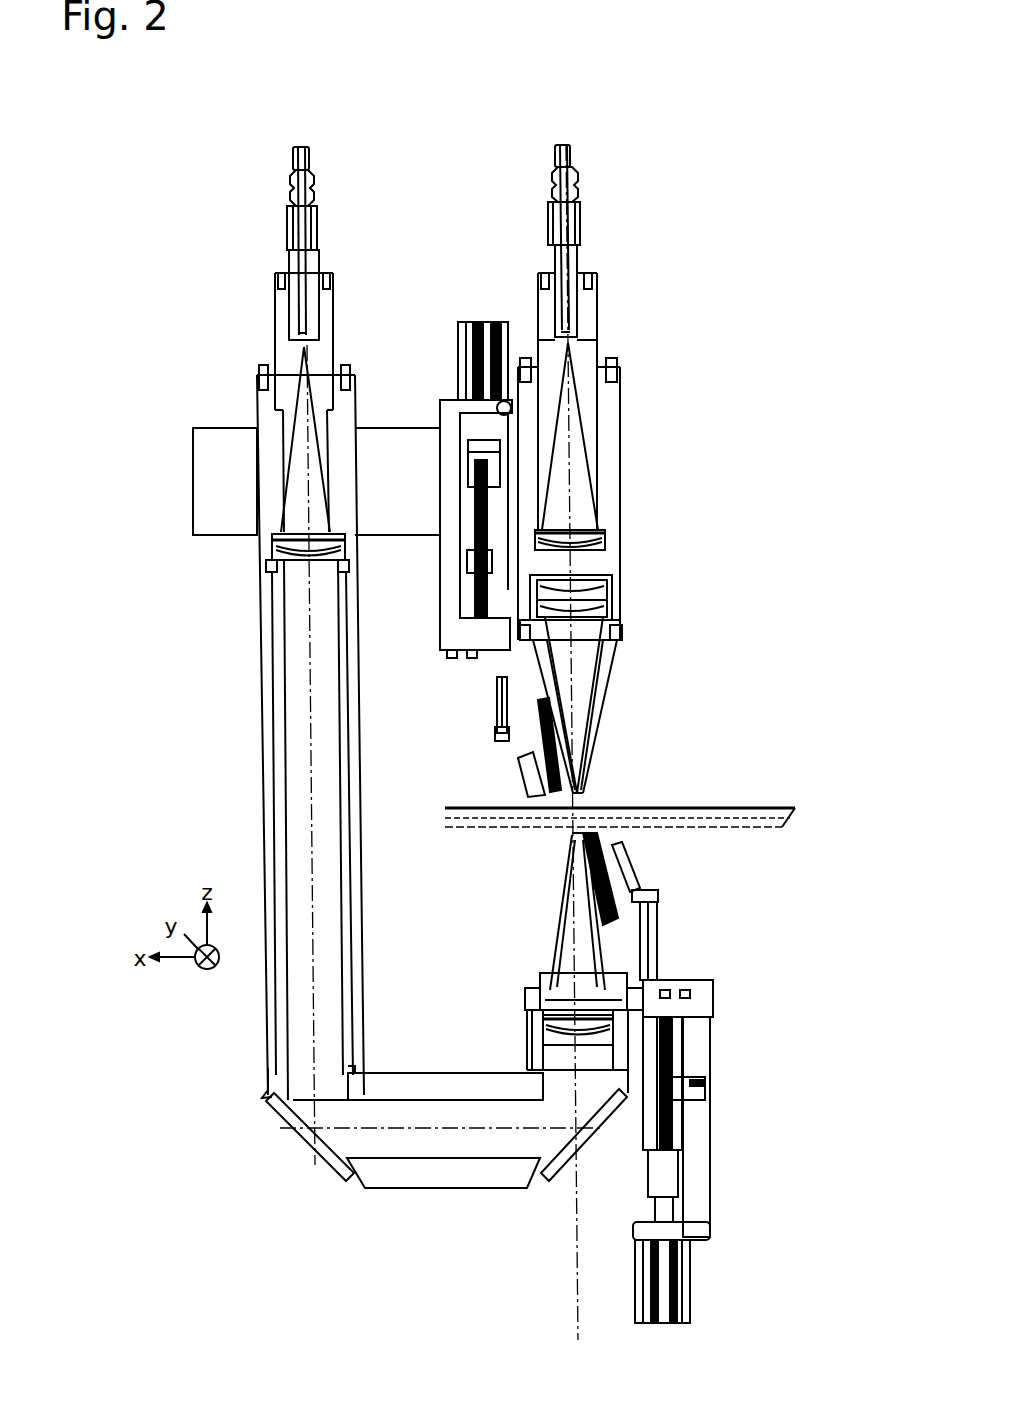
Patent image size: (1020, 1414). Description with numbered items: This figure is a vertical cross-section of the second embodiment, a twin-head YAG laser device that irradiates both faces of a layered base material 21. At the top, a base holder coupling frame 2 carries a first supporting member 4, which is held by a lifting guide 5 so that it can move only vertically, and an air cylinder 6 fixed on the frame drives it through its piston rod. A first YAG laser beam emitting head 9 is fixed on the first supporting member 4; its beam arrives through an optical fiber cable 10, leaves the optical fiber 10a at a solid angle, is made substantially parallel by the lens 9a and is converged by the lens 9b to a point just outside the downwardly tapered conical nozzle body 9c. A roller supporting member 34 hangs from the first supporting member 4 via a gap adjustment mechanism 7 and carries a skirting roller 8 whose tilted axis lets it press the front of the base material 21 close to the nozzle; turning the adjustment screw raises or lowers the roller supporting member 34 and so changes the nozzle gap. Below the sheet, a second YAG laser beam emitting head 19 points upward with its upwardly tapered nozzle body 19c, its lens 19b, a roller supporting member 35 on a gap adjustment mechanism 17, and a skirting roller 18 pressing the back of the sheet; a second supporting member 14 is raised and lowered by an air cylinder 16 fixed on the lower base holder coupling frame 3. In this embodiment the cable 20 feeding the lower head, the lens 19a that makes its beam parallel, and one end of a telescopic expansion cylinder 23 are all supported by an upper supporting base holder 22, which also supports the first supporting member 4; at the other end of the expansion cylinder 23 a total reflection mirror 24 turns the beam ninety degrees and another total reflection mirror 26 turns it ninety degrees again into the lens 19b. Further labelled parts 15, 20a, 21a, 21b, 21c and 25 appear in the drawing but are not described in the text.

The base holder coupling frame 2 is at (440, 402).
The base holder coupling frame 3 is at (704, 1220).
The first supporting member 4 is at (474, 466).
The lifting guide 5 is at (470, 526).
The air cylinder 6 is at (483, 342).
The gap adjustment mechanism 7 is at (493, 702).
The skirting roller 8 is at (533, 757).
The first YAG laser beam emitting head 9 is at (621, 427).
The lens of optical system 9a is at (606, 536).
The lens of convergence optical system 9b is at (608, 605).
The nozzle body 9c is at (603, 762).
The optical fiber cable 10 is at (576, 157).
The optical fiber 10a is at (566, 297).
The second supporting member 14 is at (700, 1012).
The actuator rod 15 is at (685, 1105).
The air cylinder 16 is at (672, 1293).
The gap adjustment mechanism 17 is at (661, 939).
The skirting roller 18 is at (610, 866).
The second YAG laser beam emitting head 19 is at (541, 953).
The lens of optical system 19a is at (270, 553).
The lens of convergence optical system 19b is at (545, 1036).
The nozzle body 19c is at (566, 868).
The cable 20 is at (294, 158).
The optical fiber end 20a is at (304, 300).
The layered base material 21 is at (689, 807).
The sheet upper layer 21a is at (733, 806).
The sheet edge 21b is at (777, 808).
The sheet lower layer 21c is at (742, 827).
The supporting base holder 22 is at (212, 468).
The telescopic expansion cylinder 23 is at (262, 718).
The total reflection mirror 24 is at (328, 1167).
The bottom housing 25 is at (465, 1188).
The total reflection mirror 26 is at (573, 1160).
The roller supporting member 34 is at (524, 790).
The roller supporting member 35 is at (628, 882).